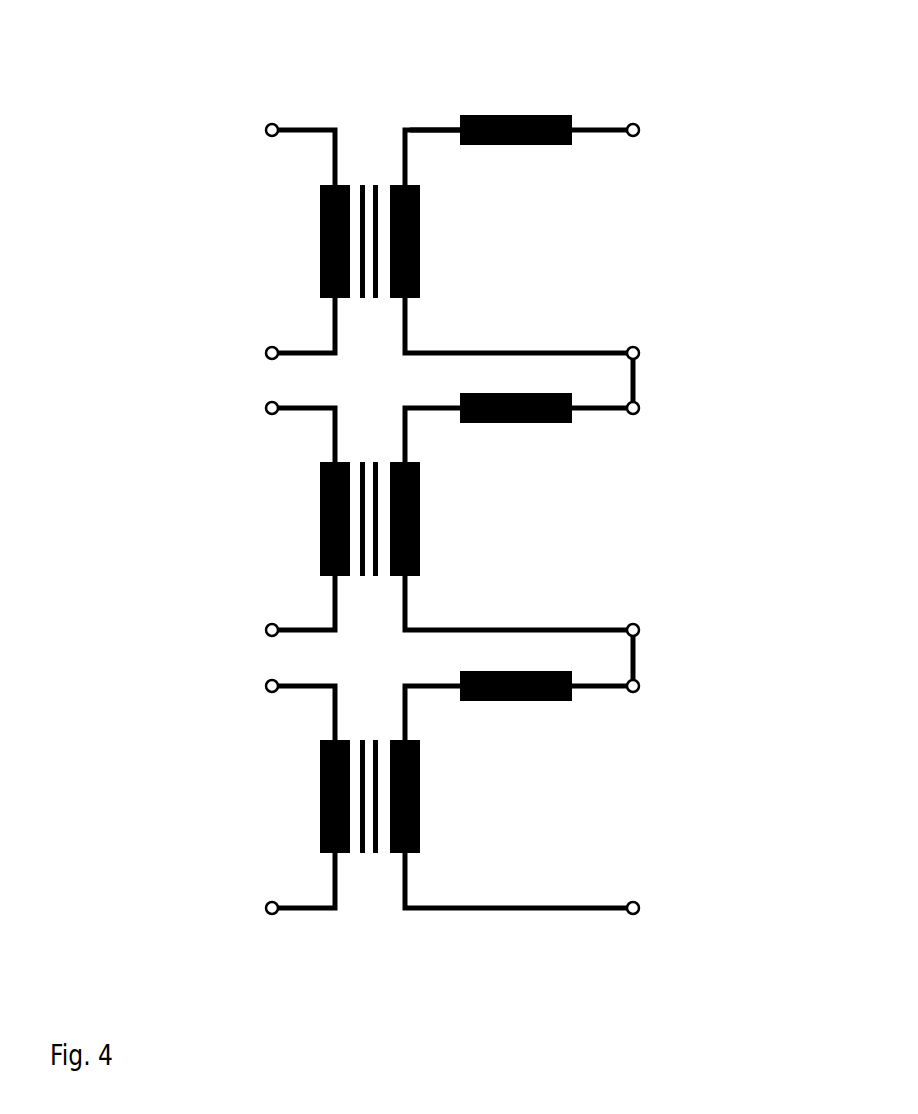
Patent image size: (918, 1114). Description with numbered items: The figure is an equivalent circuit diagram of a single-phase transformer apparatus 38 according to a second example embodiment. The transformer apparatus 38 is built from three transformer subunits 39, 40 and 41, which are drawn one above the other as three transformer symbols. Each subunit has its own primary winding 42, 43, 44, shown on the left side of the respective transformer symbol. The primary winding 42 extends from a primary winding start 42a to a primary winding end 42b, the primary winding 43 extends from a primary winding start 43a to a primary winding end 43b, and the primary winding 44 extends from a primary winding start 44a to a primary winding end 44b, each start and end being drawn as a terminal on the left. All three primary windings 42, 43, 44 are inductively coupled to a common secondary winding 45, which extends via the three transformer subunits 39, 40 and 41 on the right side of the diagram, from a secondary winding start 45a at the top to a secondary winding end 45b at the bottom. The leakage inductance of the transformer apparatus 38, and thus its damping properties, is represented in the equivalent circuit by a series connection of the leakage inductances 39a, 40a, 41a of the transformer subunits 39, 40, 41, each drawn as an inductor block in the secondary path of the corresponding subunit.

The single-phase transformer apparatus 38 is at (737, 85).
The transformer subunit 39 is at (455, 248).
The leakage inductance 39a is at (533, 145).
The transformer subunit 40 is at (455, 525).
The leakage inductance 40a is at (533, 423).
The transformer subunit 41 is at (455, 803).
The leakage inductance 41a is at (533, 700).
The primary winding 42 is at (320, 247).
The primary winding start 42a is at (265, 125).
The primary winding end 42b is at (265, 348).
The primary winding 43 is at (322, 523).
The primary winding start 43a is at (265, 402).
The primary winding end 43b is at (265, 626).
The primary winding 44 is at (322, 801).
The primary winding start 44a is at (265, 680).
The primary winding end 44b is at (265, 904).
The common secondary winding 45 is at (428, 128).
The secondary winding start 45a is at (637, 122).
The secondary winding end 45b is at (637, 914).